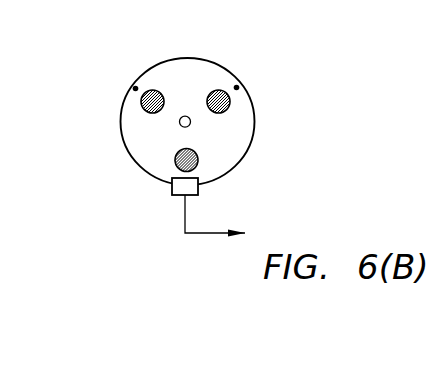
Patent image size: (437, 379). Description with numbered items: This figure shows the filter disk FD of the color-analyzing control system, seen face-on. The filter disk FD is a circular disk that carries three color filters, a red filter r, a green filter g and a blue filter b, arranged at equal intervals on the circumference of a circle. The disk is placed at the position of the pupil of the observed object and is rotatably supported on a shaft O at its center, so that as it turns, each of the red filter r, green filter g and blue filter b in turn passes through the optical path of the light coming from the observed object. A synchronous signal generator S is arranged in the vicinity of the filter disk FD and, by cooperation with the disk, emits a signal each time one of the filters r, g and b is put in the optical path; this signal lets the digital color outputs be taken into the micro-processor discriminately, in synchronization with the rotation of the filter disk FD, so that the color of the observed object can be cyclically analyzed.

The filter disk FD is at (183, 63).
The red filter r is at (221, 91).
The green filter g is at (142, 99).
The blue filter b is at (176, 163).
The shaft O is at (190, 124).
The synchronous signal generator S is at (198, 192).